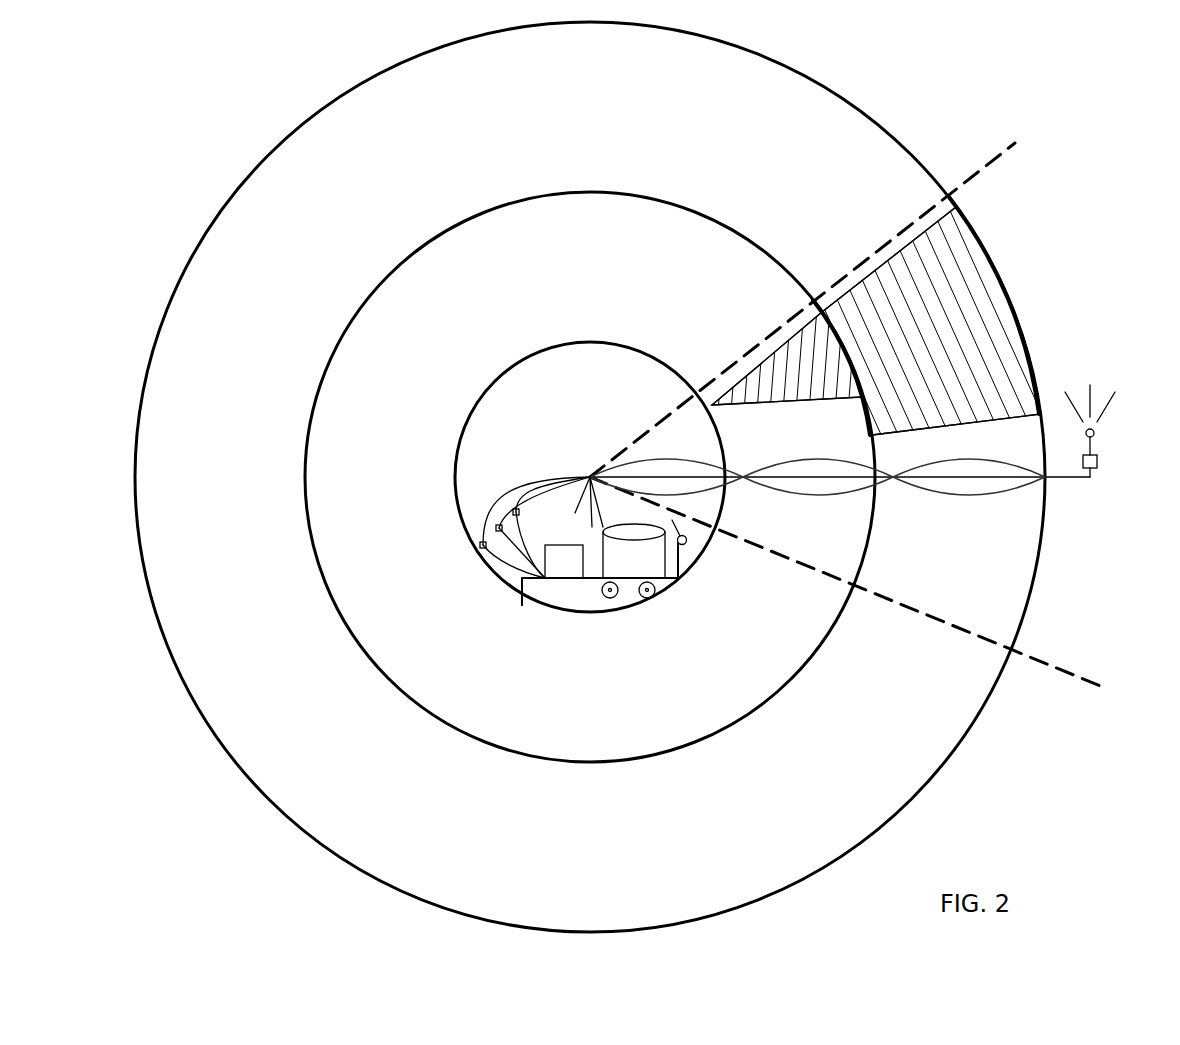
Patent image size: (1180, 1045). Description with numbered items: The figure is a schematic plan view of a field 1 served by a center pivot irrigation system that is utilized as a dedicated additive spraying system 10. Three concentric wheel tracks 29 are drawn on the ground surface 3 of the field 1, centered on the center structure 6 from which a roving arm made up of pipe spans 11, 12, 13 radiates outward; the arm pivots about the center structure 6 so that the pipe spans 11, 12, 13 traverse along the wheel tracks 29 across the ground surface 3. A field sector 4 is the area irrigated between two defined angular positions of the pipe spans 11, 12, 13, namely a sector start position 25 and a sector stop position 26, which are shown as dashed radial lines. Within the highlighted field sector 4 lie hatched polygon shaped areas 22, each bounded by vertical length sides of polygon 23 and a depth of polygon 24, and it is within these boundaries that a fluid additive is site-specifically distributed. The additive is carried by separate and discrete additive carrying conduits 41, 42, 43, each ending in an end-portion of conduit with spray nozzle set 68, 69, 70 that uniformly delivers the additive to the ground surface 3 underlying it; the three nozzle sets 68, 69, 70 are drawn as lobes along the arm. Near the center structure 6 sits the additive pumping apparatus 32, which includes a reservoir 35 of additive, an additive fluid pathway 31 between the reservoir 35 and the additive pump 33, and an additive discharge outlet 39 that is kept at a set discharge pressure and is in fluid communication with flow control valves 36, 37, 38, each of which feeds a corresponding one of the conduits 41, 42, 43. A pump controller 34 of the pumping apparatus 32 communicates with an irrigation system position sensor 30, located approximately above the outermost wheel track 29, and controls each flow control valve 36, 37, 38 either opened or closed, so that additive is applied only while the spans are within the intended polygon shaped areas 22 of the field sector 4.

The field 1 is at (969, 826).
The ground surface 3 is at (300, 168).
The field sector 4 is at (1046, 570).
The center structure 6 is at (588, 476).
The dedicated additive spraying system 10 is at (915, 505).
The pipe span 11 is at (700, 494).
The pipe span 12 is at (822, 498).
The pipe span 13 is at (967, 498).
The polygon shaped area 22 is at (965, 278).
The vertical length sides of polygon 23 is at (908, 245).
The depth of polygon 24 is at (1032, 362).
The sector start position 25 is at (1052, 667).
The sector stop position 26 is at (995, 155).
The wheel track 29 is at (732, 45).
The irrigation system position sensor 30 is at (1100, 462).
The additive fluid pathway 31 is at (623, 585).
The additive pumping apparatus 32 is at (625, 598).
The additive pump 33 is at (558, 568).
The pump controller 34 is at (568, 548).
The reservoir 35 is at (655, 566).
The flow control valve 36 is at (513, 512).
The flow control valve 37 is at (496, 528).
The flow control valve 38 is at (480, 545).
The additive discharge outlet 39 is at (521, 590).
The additive carrying conduit 41 is at (510, 487).
The additive carrying conduit 42 is at (553, 494).
The additive carrying conduit 43 is at (544, 502).
The end-portion of conduit with spray nozzle set 68 is at (694, 466).
The end-portion of conduit with spray nozzle set 69 is at (809, 468).
The end-portion of conduit with spray nozzle set 70 is at (965, 470).